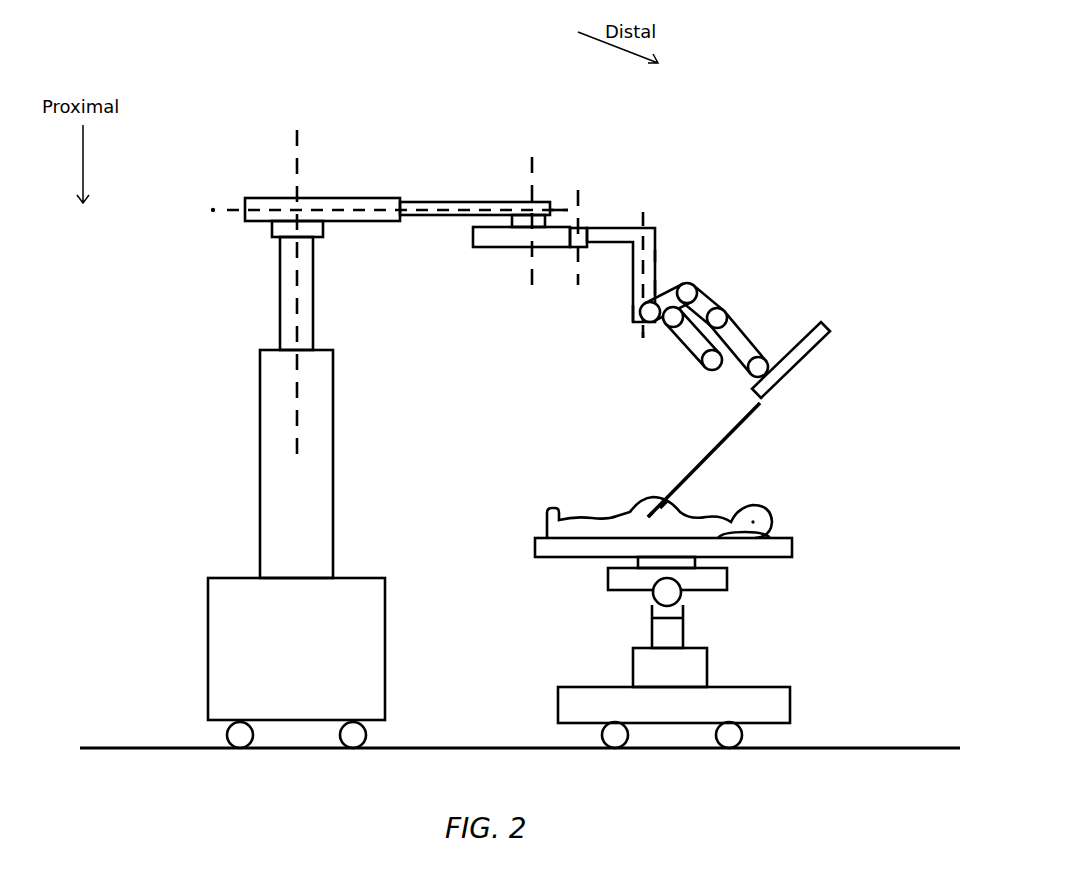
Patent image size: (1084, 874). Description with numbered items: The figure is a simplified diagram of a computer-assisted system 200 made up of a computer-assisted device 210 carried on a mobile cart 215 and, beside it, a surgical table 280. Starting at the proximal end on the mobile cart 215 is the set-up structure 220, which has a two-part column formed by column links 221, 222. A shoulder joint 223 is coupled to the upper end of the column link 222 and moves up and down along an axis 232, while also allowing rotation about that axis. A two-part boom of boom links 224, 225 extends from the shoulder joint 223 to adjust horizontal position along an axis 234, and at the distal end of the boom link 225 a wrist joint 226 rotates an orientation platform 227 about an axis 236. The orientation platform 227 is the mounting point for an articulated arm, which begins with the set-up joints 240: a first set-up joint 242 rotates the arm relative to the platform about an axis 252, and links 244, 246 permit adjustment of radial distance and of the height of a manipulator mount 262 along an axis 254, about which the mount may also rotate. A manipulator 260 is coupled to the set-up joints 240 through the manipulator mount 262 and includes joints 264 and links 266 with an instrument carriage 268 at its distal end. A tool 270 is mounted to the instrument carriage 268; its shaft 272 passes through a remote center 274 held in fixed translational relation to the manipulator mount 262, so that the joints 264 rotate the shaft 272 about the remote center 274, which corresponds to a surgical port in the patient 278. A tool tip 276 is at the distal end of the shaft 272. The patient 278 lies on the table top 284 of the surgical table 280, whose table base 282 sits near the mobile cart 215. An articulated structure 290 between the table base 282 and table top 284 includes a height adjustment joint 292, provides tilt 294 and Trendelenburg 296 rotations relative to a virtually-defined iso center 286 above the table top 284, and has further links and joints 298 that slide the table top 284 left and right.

The computer-assisted system 200 is at (243, 50).
The computer-assisted device 210 is at (303, 772).
The mobile cart 215 is at (208, 640).
The set-up structure 220 is at (188, 192).
The column link 221 is at (333, 430).
The column link 222 is at (315, 290).
The shoulder joint 223 is at (275, 242).
The boom link 224 is at (335, 198).
The boom link 225 is at (440, 204).
The wrist joint 226 is at (512, 224).
The orientation platform 227 is at (500, 249).
The axis 232 is at (297, 130).
The axis 234 is at (232, 210).
The axis 236 is at (532, 157).
The set-up joints 240 is at (755, 215).
The first set-up joint 242 is at (587, 230).
The link 244 is at (656, 262).
The link 246 is at (656, 290).
The axis 252 is at (578, 192).
The axis 254 is at (640, 335).
The manipulator 260 is at (832, 350).
The manipulator mount 262 is at (633, 316).
The joints 264 is at (640, 312).
The links 266 is at (678, 284).
The instrument carriage 268 is at (805, 365).
The tool 270 is at (893, 360).
The shaft 272 is at (750, 418).
The remote center 274 is at (662, 512).
The tool tip 276 is at (648, 508).
The patient 278 is at (776, 522).
The surgical table 280 is at (679, 772).
The table base 282 is at (558, 690).
The table top 284 is at (552, 545).
The iso center 286 is at (673, 502).
The articulated structure 290 is at (800, 553).
The height adjustment joint 292 is at (688, 648).
The tilt 294 is at (652, 606).
The Trendelenburg 296 is at (687, 589).
The links and joints 298 is at (608, 573).